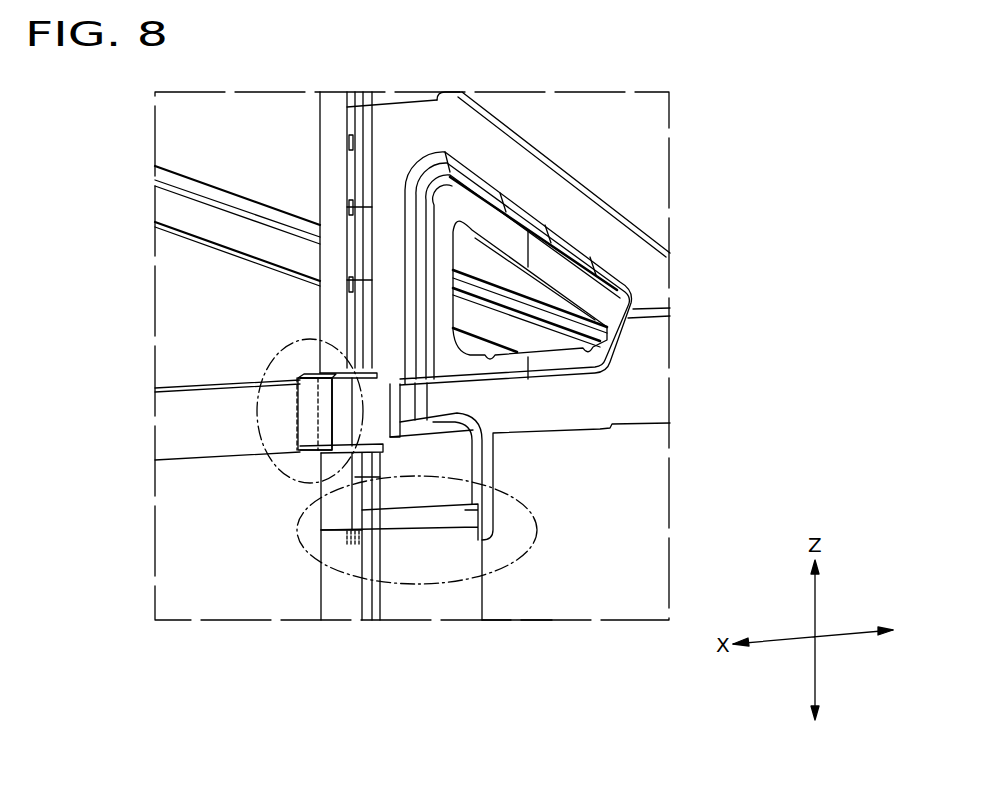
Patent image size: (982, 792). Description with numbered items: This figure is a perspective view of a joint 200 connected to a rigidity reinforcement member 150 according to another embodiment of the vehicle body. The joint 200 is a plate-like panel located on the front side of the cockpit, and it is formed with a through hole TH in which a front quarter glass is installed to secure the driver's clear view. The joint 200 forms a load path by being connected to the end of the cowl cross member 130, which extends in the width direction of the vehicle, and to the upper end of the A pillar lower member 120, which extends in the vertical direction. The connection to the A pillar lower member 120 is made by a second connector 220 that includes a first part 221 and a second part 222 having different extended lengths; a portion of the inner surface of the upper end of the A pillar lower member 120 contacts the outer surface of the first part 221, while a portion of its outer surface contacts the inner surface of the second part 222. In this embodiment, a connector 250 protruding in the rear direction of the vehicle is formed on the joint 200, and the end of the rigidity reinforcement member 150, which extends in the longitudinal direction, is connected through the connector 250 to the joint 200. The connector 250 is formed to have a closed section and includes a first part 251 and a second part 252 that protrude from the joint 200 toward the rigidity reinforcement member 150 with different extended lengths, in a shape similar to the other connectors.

The cowl cross member 130 is at (178, 210).
The connector 250 is at (262, 493).
The rigidity reinforcement member 150 is at (180, 430).
The second part 252 is at (317, 396).
The first part 251 is at (343, 435).
The joint 200 is at (556, 204).
The through hole TH is at (516, 279).
The second connector 220 is at (397, 590).
The second part 222 is at (337, 545).
The first part 221 is at (537, 560).
The A pillar lower member 120 is at (458, 597).